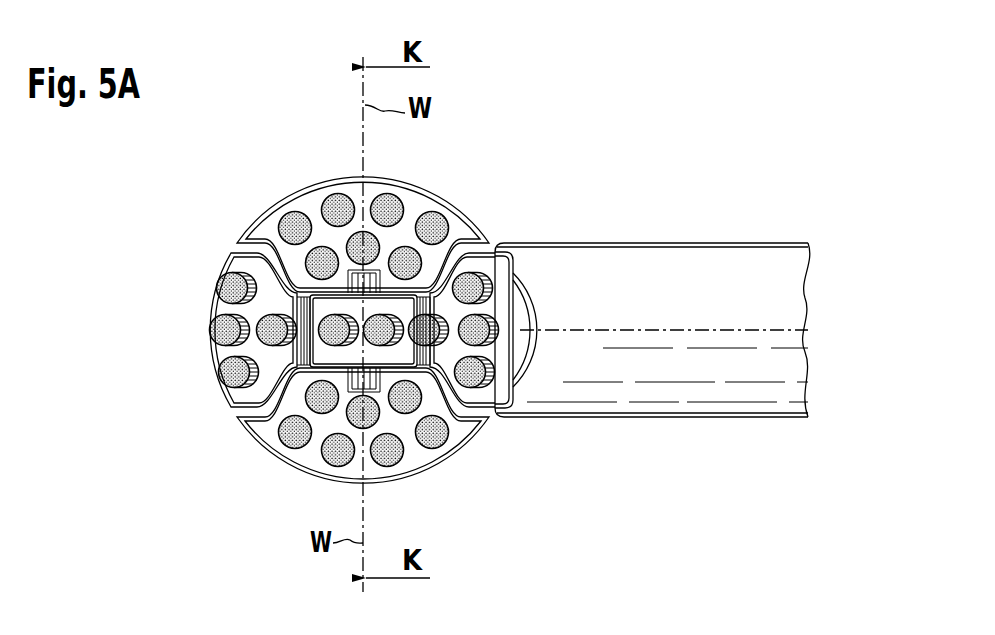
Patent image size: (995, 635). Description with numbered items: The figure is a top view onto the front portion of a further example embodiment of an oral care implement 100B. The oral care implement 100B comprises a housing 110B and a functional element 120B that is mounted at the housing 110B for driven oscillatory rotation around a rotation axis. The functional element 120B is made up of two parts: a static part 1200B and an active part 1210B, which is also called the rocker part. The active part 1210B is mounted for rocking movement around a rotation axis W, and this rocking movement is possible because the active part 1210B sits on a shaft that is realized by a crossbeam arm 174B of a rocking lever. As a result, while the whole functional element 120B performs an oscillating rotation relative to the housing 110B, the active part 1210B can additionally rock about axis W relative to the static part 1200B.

The oral care implement 100B is at (572, 82).
The housing 110B is at (697, 283).
The functional element 120B is at (310, 162).
The crossbeam arm 174B is at (353, 280).
The static part 1200B is at (428, 192).
The active part 1210B is at (215, 350).